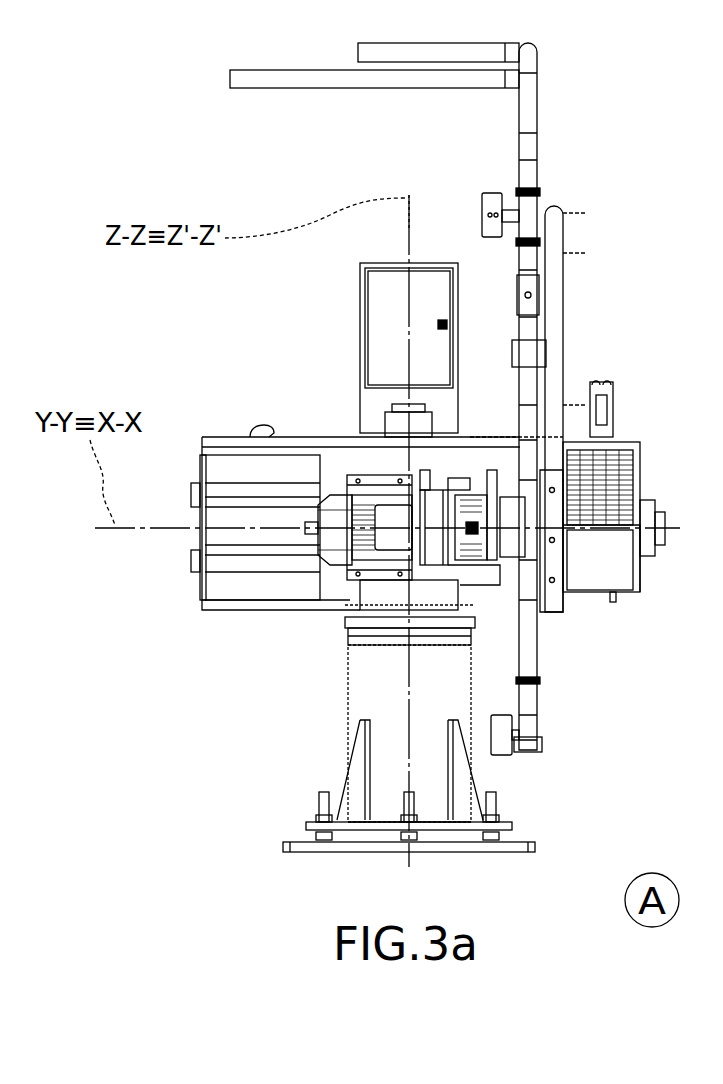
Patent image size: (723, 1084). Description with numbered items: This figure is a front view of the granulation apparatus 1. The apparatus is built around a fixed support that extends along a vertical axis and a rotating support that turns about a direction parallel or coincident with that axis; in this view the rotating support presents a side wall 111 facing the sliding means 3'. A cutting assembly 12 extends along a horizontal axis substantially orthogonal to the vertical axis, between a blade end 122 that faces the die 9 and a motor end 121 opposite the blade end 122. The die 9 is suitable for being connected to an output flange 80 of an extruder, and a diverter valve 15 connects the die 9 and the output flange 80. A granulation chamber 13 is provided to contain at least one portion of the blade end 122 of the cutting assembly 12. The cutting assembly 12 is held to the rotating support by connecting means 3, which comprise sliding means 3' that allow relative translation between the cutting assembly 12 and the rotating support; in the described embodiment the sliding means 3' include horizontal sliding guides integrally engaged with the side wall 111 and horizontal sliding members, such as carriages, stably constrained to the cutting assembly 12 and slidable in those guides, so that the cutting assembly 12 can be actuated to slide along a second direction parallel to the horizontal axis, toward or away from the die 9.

The granulation apparatus 1 is at (655, 183).
The connecting means 3 is at (355, 453).
The sliding means 3' is at (234, 458).
The die 9 is at (545, 575).
The cutting assembly 12 is at (382, 588).
The granulation chamber 13 is at (513, 533).
The diverter valve 15 is at (608, 567).
The output flange 80 is at (645, 448).
The side wall 111 is at (452, 435).
The motor end 121 is at (335, 542).
The blade end 122 is at (500, 560).